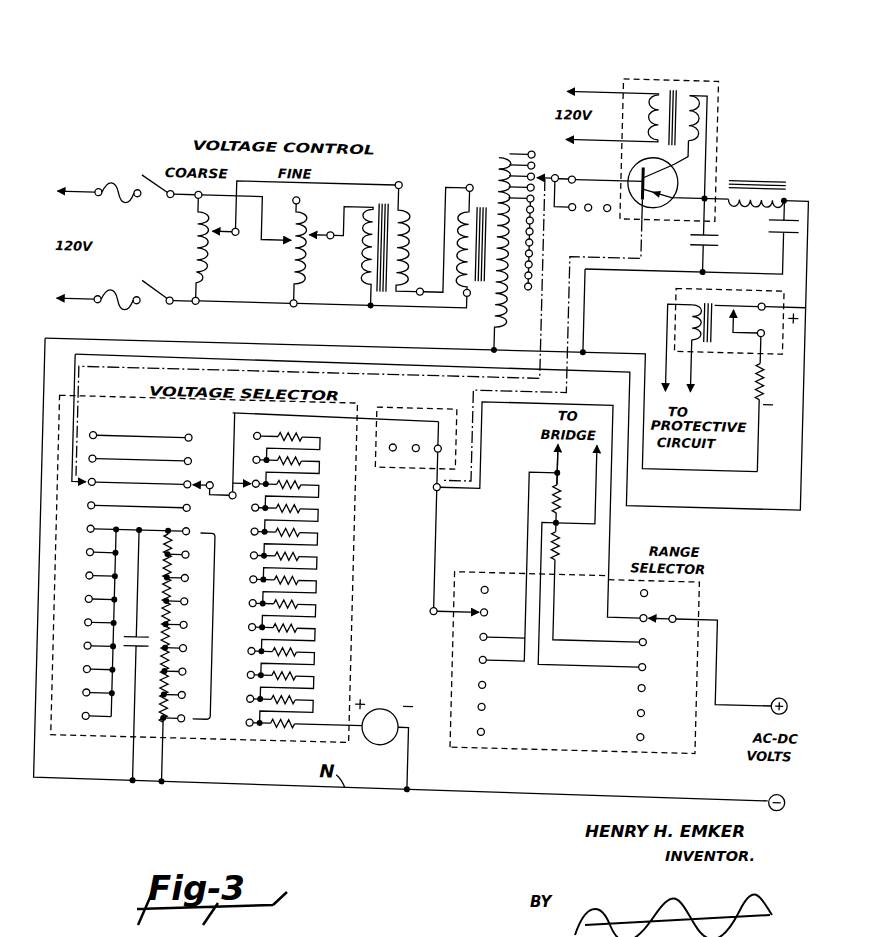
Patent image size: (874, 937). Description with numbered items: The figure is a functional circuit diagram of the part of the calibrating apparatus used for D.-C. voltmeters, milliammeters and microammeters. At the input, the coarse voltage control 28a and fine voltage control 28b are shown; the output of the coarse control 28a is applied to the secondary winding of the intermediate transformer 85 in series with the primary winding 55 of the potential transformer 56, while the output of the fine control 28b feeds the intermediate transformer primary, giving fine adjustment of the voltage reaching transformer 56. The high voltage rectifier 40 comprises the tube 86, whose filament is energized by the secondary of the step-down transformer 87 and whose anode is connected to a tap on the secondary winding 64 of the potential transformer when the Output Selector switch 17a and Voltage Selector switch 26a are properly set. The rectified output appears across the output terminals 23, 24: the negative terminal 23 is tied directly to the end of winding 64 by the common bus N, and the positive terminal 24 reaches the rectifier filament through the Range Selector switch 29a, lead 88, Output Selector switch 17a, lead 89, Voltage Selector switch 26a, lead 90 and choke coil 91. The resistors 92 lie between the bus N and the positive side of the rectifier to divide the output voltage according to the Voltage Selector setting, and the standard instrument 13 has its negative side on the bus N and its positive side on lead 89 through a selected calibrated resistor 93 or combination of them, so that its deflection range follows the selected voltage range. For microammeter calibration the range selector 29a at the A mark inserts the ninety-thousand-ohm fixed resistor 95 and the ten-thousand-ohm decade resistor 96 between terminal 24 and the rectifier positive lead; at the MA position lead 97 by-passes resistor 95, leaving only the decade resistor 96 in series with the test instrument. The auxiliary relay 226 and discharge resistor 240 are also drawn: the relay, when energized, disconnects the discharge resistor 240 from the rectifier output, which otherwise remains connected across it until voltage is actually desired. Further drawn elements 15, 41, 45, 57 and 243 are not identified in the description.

The standard instrument 13 is at (385, 711).
The fuses and line switches 15 is at (143, 198).
The Output Selector switch 17a is at (559, 208).
The negative output terminal 23 is at (783, 788).
The positive output terminal 24 is at (780, 692).
The Voltage Selector switch 26a is at (532, 170).
The coarse voltage control 28a is at (184, 281).
The fine voltage control 28b is at (279, 257).
The Range Selector switch 29a is at (702, 577).
The high voltage rectifier 40 is at (707, 96).
The 120V supply leads 41 is at (588, 86).
The connecting lead 45 is at (430, 219).
The primary winding 55 is at (454, 249).
The potential transformer 56 is at (474, 184).
The common lead 57 is at (471, 351).
The secondary winding 64 is at (502, 299).
The intermediate transformer 85 is at (351, 279).
The tube 86 is at (674, 174).
The step-down transformer 87 is at (660, 87).
The lead 88 is at (616, 545).
The lead 89 is at (233, 449).
The lead 90 is at (130, 369).
The choke coil 91 is at (750, 202).
The resistors 92 is at (193, 657).
The calibrated resistors 93 is at (304, 492).
The fixed resistor 95 is at (564, 537).
The decade resistor 96 is at (562, 487).
The lead 97 is at (607, 664).
The auxiliary relay 226 is at (668, 286).
The discharge resistor 240 is at (747, 385).
The lead 243 is at (602, 171).